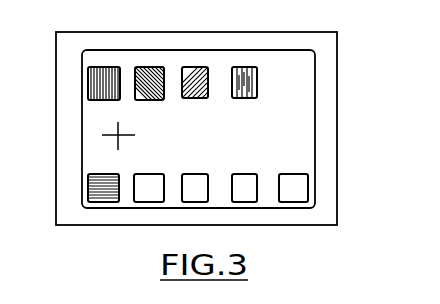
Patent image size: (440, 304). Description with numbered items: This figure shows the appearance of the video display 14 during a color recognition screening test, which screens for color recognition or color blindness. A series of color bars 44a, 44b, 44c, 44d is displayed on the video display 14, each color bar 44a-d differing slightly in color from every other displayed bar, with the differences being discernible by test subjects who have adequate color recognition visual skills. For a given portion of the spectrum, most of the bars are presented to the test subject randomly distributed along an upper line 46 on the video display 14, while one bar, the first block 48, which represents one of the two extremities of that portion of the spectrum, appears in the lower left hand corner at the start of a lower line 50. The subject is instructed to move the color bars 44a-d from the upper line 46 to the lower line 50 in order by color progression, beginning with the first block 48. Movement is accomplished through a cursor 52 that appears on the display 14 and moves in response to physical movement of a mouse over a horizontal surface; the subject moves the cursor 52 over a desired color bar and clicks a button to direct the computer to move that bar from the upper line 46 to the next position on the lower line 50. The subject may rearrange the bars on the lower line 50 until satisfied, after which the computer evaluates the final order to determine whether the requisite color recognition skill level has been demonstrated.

The video display 14 is at (72, 226).
The color bar 44a is at (95, 67).
The color bar 44b is at (148, 67).
The color bar 44c is at (193, 67).
The color bar 44d is at (245, 67).
The upper line 46 is at (267, 90).
The first block 48 is at (112, 175).
The lower line 50 is at (310, 195).
The cursor 52 is at (118, 143).